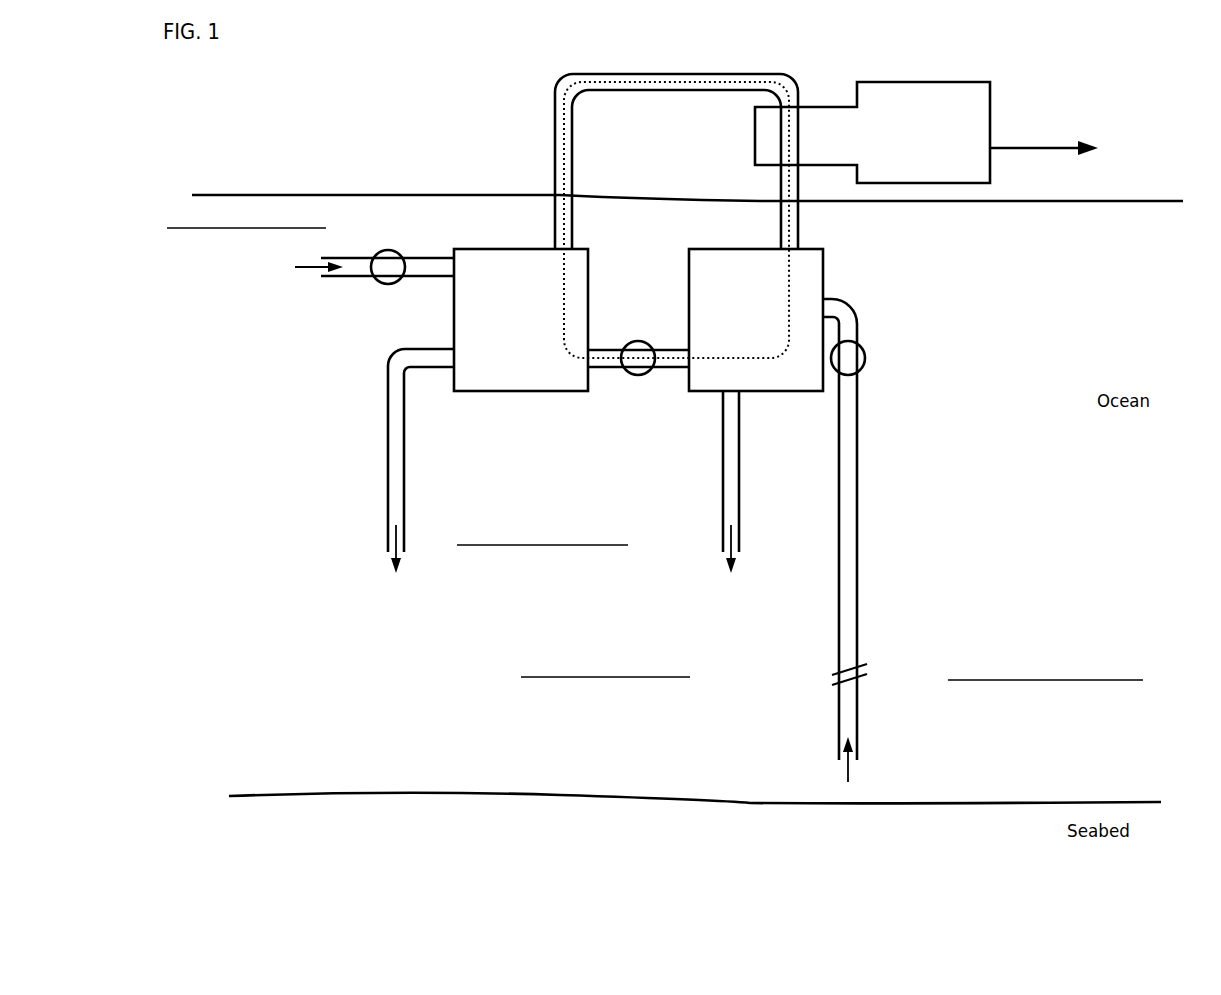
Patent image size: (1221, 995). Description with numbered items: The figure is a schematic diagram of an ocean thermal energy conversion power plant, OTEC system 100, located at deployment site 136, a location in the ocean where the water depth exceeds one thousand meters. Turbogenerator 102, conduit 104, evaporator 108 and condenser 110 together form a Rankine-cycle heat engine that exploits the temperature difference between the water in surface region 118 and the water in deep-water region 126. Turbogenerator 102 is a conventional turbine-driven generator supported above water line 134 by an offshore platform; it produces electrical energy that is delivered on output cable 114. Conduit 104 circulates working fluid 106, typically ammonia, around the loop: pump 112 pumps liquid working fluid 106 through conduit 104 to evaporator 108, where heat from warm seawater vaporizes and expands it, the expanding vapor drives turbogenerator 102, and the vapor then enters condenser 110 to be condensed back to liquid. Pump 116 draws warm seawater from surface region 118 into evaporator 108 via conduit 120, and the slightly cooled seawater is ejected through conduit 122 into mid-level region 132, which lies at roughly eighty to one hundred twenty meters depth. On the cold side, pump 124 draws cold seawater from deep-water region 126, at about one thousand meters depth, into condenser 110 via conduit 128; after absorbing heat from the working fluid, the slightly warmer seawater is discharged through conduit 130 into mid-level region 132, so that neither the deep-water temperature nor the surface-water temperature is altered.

The OTEC system 100 is at (285, 88).
The turbogenerator 102 is at (931, 82).
The conduit 104 is at (556, 172).
The working fluid 106 is at (567, 115).
The evaporator 108 is at (489, 393).
The condenser 110 is at (792, 393).
The pump 112 is at (641, 340).
The output cable 114 is at (1030, 148).
The pump 116 is at (404, 228).
The surface region 118 is at (246, 217).
The conduit 120 is at (338, 278).
The conduit 122 is at (388, 451).
The pump 124 is at (866, 358).
The deep-water region 126 is at (1045, 669).
The conduit 128 is at (860, 710).
The conduit 130 is at (722, 451).
The mid-level region 132 is at (542, 534).
The water line 134 is at (1022, 203).
The deployment site 136 is at (605, 666).